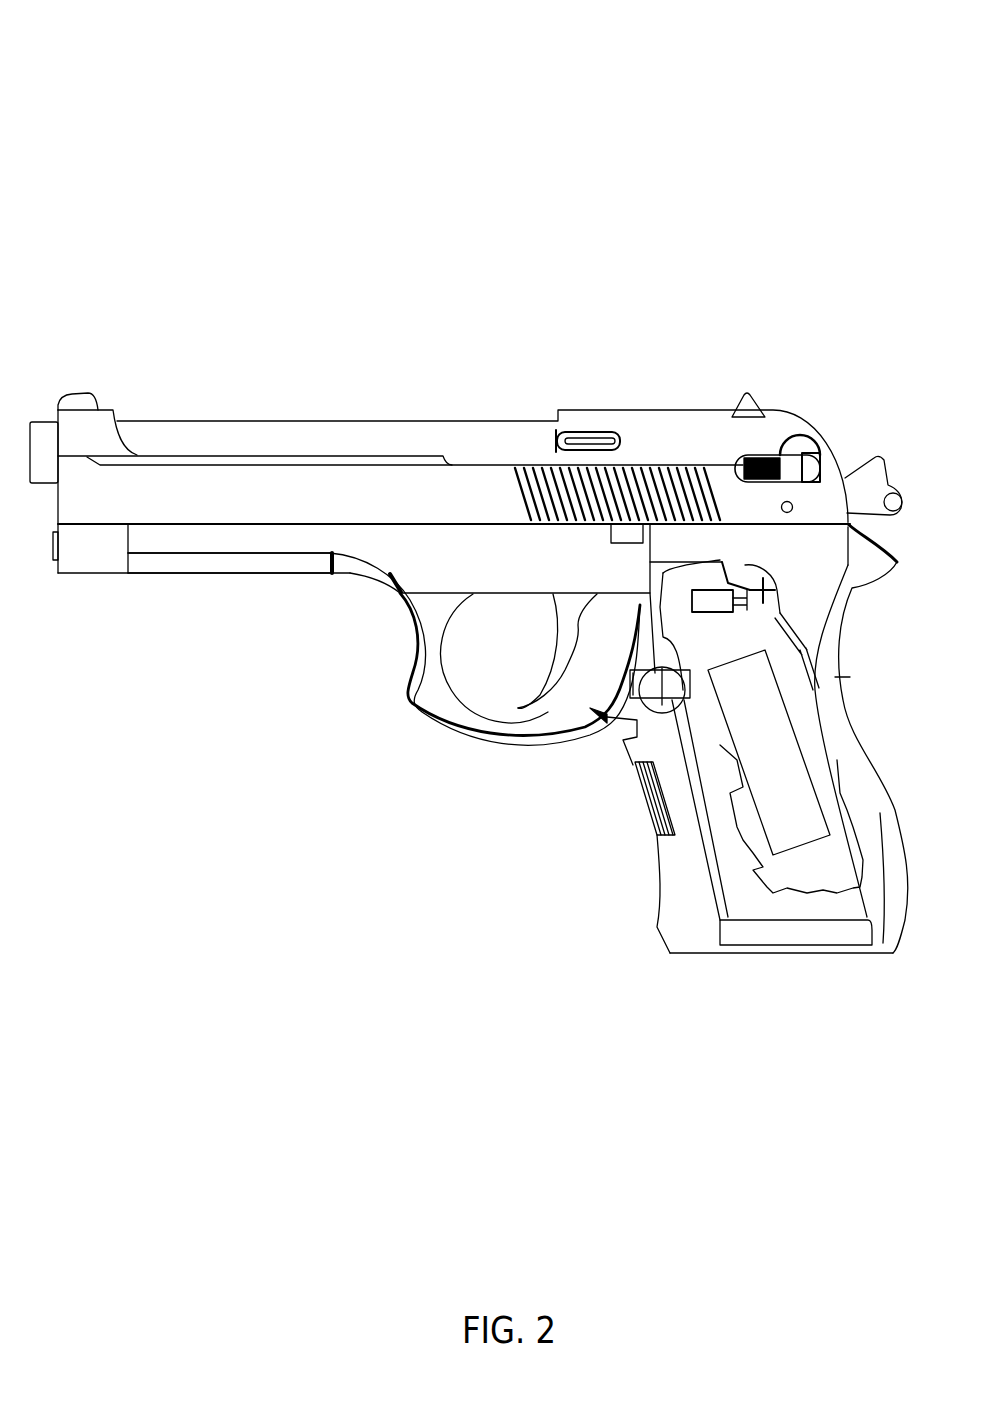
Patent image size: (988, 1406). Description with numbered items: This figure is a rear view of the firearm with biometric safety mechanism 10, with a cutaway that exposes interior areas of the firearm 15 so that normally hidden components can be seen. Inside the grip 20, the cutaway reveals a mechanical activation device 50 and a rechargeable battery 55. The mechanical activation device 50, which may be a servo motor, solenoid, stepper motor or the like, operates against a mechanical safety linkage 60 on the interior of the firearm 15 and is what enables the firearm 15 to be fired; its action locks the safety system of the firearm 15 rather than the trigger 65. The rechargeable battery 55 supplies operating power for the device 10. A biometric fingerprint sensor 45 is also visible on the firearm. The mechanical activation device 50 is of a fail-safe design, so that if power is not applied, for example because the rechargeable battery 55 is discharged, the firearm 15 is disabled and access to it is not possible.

The firearm with biometric safety mechanism 10 is at (108, 175).
The firearm 15 is at (290, 577).
The grip 20 is at (728, 870).
The biometric fingerprint sensor 45 is at (653, 830).
The mechanical activation device 50 is at (707, 600).
The rechargeable battery 55 is at (737, 727).
The mechanical safety linkage 60 is at (738, 563).
The trigger 65 is at (553, 643).